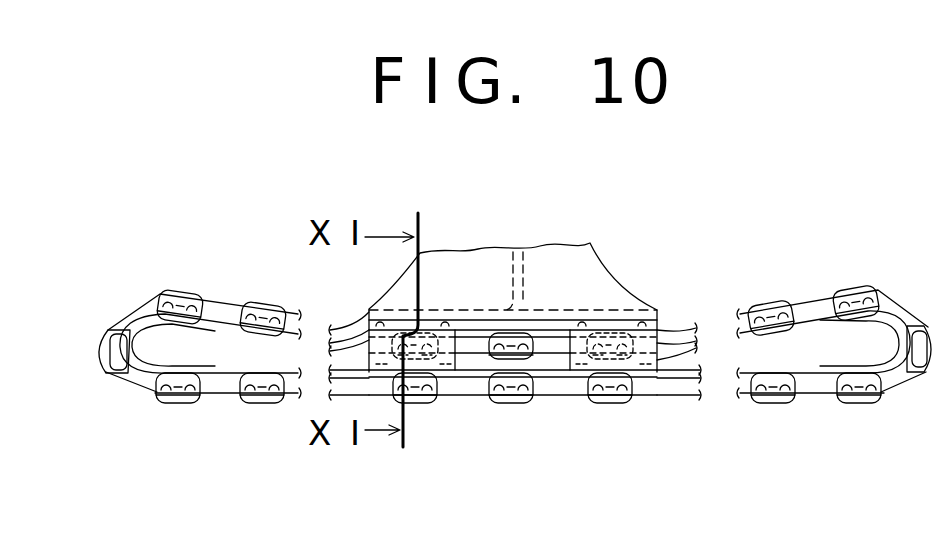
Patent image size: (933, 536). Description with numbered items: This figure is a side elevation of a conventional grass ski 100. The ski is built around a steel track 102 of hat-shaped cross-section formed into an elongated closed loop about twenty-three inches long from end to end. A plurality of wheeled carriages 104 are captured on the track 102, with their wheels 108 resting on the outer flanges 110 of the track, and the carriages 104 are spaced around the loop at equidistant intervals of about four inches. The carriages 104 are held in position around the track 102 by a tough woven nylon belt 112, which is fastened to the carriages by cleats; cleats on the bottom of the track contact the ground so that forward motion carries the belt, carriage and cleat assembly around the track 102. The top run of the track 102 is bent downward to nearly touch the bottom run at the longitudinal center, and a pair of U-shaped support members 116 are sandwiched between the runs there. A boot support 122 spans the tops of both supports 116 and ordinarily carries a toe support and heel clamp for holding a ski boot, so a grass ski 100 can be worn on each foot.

The grass ski 100 is at (778, 196).
The steel track 102 is at (796, 330).
The wheeled carriages 104 is at (268, 413).
The wheels 108 is at (254, 404).
The outer flanges 110 is at (222, 382).
The belt 112 is at (140, 397).
The U-shaped support members 116 is at (368, 331).
The boot support 122 is at (517, 318).